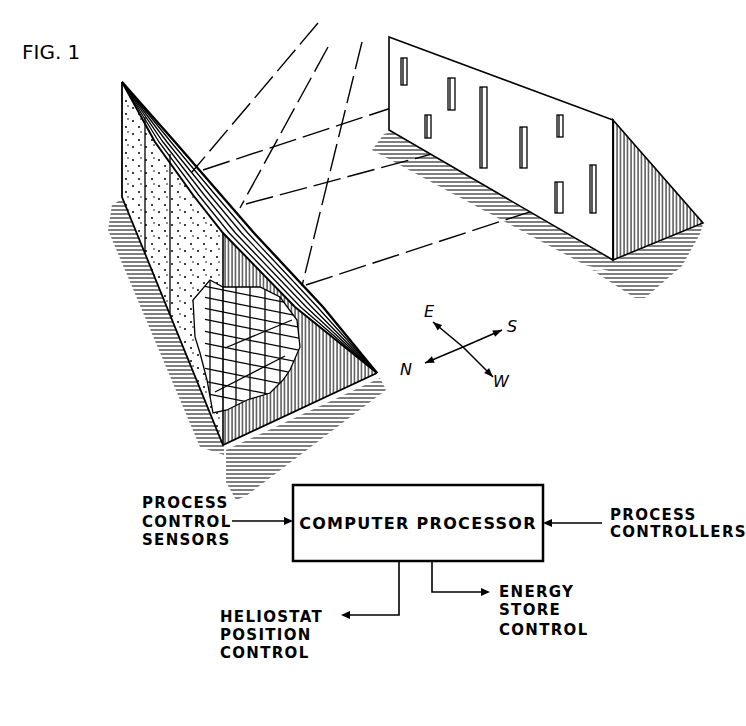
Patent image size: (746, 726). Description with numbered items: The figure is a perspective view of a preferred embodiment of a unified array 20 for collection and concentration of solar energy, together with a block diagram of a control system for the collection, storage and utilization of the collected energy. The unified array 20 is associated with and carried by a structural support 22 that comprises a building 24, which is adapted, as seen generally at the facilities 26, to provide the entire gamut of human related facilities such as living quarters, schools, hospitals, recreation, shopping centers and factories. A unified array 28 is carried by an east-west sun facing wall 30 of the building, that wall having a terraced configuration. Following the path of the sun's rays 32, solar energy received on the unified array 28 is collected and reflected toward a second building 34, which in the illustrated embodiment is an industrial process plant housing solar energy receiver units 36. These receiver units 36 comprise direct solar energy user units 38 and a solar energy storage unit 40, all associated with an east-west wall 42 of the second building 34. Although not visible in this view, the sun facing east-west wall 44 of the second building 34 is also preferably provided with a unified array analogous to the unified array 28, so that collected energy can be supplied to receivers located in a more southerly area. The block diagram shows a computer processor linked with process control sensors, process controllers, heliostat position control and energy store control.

The unified array 20 is at (229, 290).
The structural support 22 is at (137, 255).
The building 24 is at (162, 262).
The human related facilities 26 is at (247, 362).
The unified array 28 is at (188, 157).
The east-west sun facing wall 30 is at (333, 332).
The sun's rays 32 is at (277, 152).
The second building 34 is at (540, 167).
The solar energy receiver units 36 is at (512, 163).
The direct solar energy user units 38 is at (450, 88).
The solar energy storage unit 40 is at (486, 114).
The east-west wall 42 is at (596, 154).
The sun facing east-west wall 44 is at (657, 167).